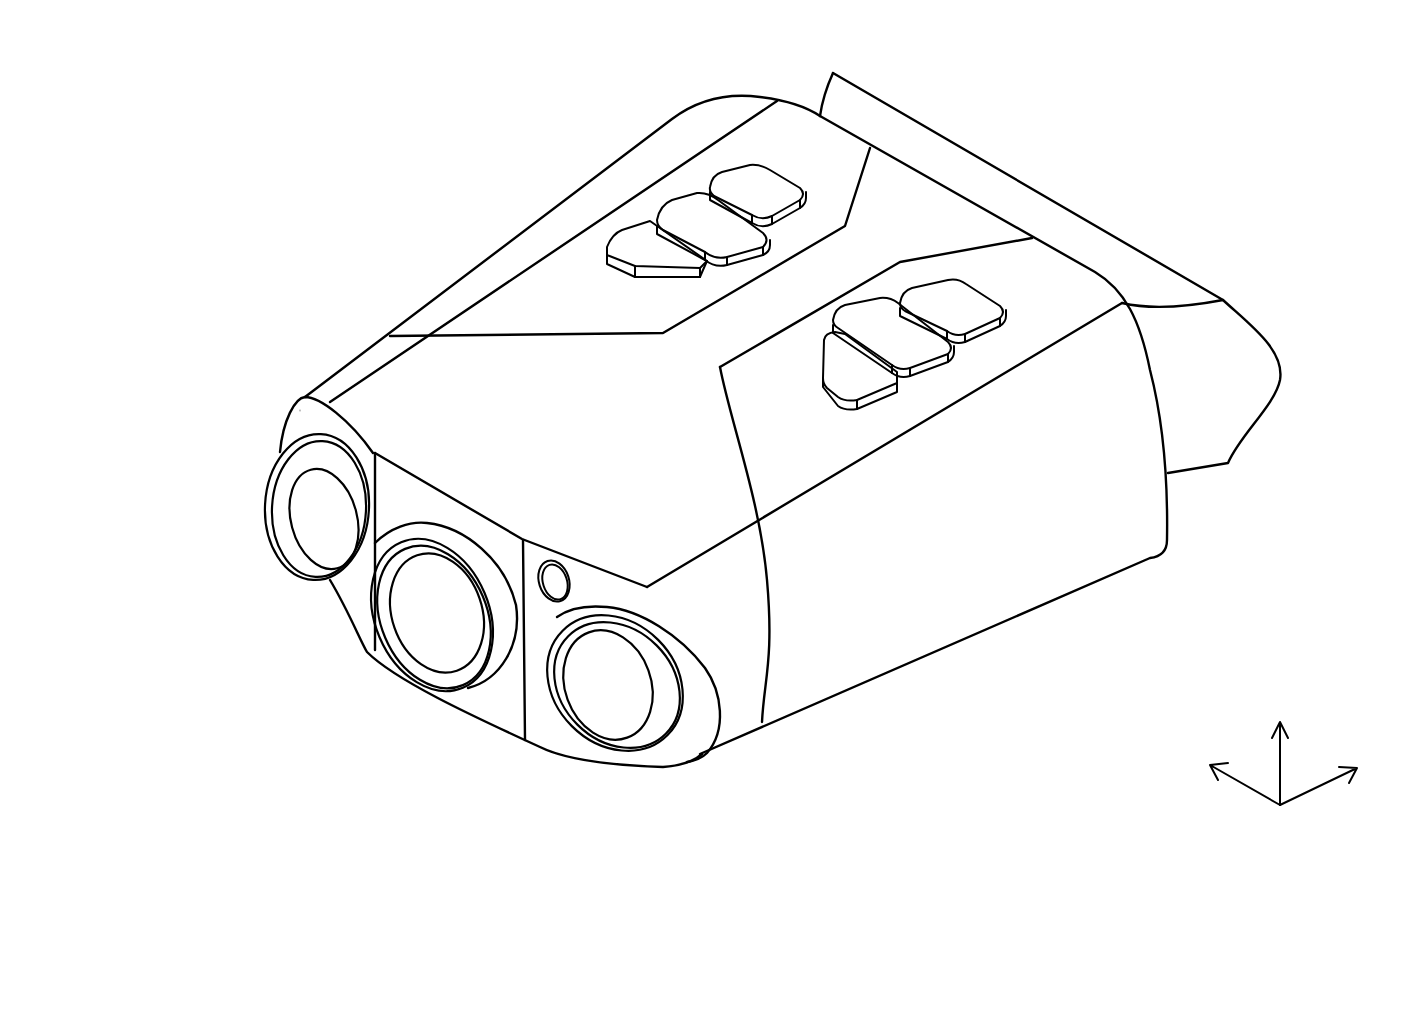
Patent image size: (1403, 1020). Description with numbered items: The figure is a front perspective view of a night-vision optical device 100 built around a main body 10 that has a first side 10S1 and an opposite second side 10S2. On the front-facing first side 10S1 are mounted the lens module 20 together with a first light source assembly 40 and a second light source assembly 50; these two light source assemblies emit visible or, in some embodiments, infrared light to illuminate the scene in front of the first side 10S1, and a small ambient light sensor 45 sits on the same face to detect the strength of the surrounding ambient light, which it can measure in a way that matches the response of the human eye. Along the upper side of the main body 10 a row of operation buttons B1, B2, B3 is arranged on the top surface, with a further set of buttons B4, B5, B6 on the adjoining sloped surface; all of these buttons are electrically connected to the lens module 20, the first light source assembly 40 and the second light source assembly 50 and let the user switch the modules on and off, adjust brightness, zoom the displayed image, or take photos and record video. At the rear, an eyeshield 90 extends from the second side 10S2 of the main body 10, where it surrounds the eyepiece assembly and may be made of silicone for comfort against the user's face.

The night-vision optical device 100 is at (166, 43).
The main body 10 is at (495, 247).
The first side 10S1 is at (293, 431).
The second side 10S2 is at (729, 98).
The lens module 20 is at (418, 667).
The first light source assembly 40 is at (301, 540).
The ambient light sensor 45 is at (550, 597).
The second light source assembly 50 is at (585, 720).
The eyeshield 90 is at (1153, 268).
The operation button B1 is at (637, 245).
The operation button B2 is at (690, 215).
The operation button B3 is at (740, 172).
The operation button B4 is at (863, 370).
The operation button B5 is at (917, 345).
The operation button B6 is at (970, 315).